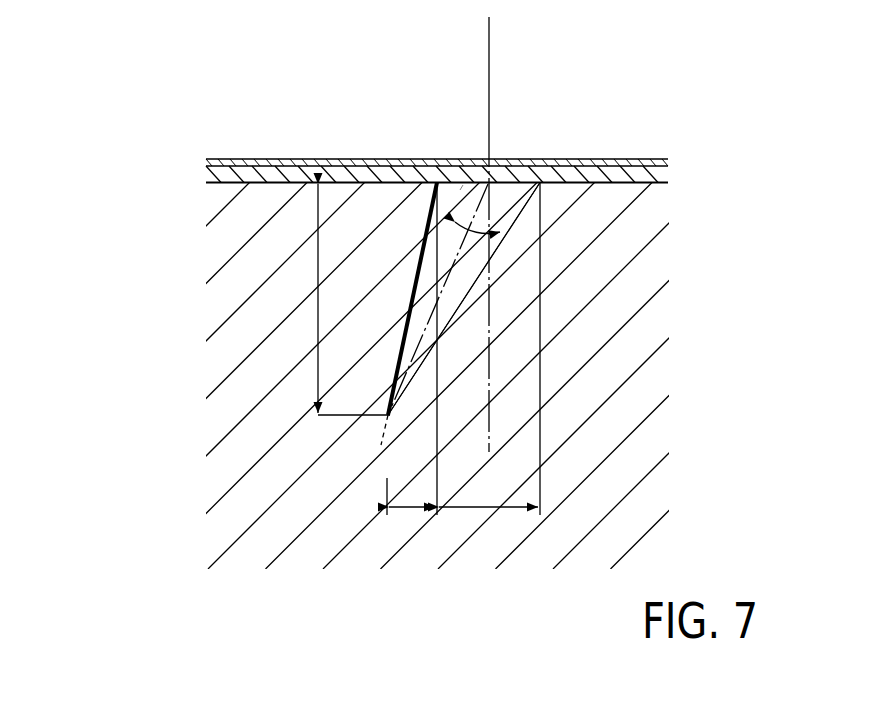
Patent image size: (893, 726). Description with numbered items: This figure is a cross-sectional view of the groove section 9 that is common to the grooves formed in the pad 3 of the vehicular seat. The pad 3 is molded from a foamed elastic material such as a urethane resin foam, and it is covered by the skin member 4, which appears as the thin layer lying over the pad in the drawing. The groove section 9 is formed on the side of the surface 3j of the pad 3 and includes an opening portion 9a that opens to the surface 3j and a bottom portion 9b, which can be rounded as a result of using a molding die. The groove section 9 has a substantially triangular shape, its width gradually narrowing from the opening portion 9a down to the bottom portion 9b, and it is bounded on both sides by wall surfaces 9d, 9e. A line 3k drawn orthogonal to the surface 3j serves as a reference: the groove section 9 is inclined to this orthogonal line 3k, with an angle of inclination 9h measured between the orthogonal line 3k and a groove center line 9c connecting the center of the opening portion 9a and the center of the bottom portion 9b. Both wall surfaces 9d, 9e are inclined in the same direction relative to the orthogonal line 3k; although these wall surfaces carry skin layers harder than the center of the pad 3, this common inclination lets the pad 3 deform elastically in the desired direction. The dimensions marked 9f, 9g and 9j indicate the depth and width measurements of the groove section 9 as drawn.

The pad 3 is at (277, 360).
The skin member 4 is at (268, 177).
The surface 3j is at (615, 170).
The orthogonal line 3k is at (489, 57).
The groove section 9 is at (428, 211).
The opening portion 9a is at (502, 180).
The bottom portion 9b is at (389, 416).
The groove center line 9c is at (463, 180).
The wall surface 9d is at (409, 303).
The wall surface 9e is at (500, 236).
The depth of groove 9f is at (338, 299).
The width dimension 9g is at (489, 349).
The angle of inclination 9h is at (460, 190).
The width dimension 9j is at (412, 349).